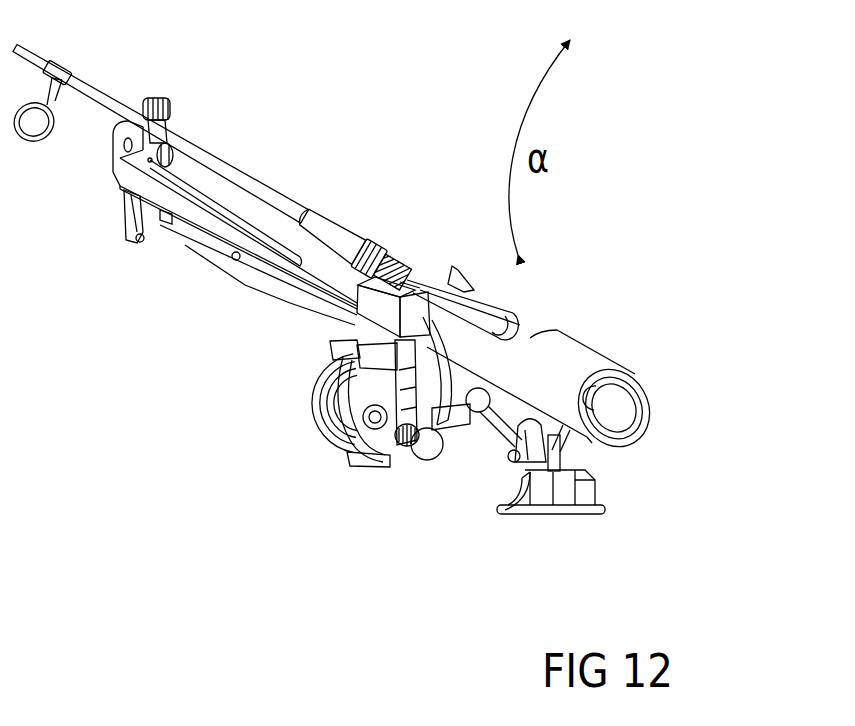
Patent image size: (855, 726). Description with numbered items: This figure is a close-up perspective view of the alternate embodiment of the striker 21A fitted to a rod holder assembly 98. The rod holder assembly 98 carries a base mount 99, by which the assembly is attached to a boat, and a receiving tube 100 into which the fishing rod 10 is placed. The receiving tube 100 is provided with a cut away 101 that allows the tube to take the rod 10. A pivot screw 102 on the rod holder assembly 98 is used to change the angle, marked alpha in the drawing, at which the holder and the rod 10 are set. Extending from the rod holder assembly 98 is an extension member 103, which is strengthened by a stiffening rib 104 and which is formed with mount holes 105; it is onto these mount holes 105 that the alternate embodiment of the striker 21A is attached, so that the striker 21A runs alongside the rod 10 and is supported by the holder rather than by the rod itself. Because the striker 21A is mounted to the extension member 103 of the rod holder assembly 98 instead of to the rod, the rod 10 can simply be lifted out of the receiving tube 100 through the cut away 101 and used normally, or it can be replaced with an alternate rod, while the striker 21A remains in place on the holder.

The fishing rod 10 is at (345, 193).
The striker 21A is at (190, 172).
The rod holder assembly 98 is at (575, 243).
The base mount 99 is at (541, 523).
The receiving tube 100 is at (607, 357).
The cut away 101 is at (513, 327).
The pivot screw 102 is at (512, 458).
The extension member 103 is at (250, 275).
The stiffening rib 104 is at (314, 288).
The mount holes 105 is at (232, 258).